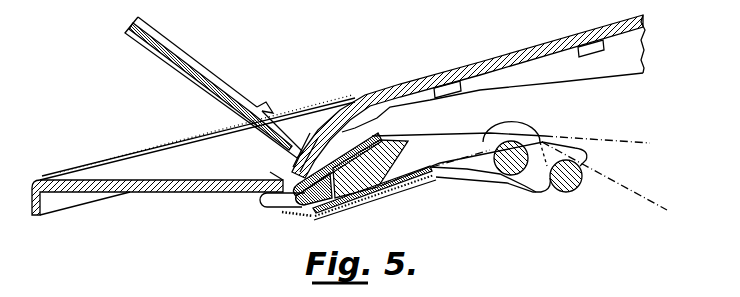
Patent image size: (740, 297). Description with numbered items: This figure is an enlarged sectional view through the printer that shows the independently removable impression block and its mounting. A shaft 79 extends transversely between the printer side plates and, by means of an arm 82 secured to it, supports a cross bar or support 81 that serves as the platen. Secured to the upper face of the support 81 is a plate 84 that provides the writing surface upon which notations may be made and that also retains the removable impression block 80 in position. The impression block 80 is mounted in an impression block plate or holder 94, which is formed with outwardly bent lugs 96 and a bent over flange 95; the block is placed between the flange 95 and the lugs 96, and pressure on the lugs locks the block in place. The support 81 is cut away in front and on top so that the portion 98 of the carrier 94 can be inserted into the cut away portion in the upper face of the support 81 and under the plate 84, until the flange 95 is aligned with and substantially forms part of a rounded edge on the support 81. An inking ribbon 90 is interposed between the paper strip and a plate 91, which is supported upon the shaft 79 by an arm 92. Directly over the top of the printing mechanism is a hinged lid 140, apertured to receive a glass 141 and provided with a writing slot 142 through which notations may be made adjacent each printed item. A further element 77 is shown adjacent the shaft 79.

The hinged lid 140 is at (98, 180).
The glass 141 is at (503, 55).
The writing slot 142 is at (272, 170).
The writing surface plate 84 is at (348, 143).
The impression block plate or holder 94 is at (330, 150).
The portion of the carrier 98 is at (383, 135).
The arm 92 is at (445, 150).
The shaft 79 is at (517, 157).
The roller 77 is at (568, 163).
The arm 82 is at (447, 180).
The bent over flange 95 is at (262, 201).
The impression block 80 is at (308, 217).
The inking ribbon 90 is at (310, 221).
The outwardly bent lugs 96 is at (344, 209).
The plate 91 is at (354, 200).
The cross bar or support 81 is at (360, 170).